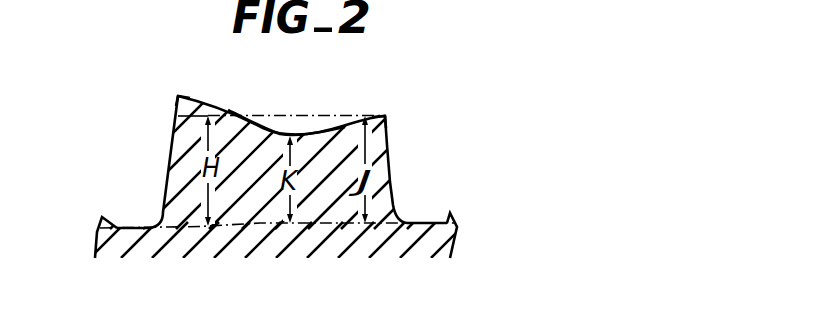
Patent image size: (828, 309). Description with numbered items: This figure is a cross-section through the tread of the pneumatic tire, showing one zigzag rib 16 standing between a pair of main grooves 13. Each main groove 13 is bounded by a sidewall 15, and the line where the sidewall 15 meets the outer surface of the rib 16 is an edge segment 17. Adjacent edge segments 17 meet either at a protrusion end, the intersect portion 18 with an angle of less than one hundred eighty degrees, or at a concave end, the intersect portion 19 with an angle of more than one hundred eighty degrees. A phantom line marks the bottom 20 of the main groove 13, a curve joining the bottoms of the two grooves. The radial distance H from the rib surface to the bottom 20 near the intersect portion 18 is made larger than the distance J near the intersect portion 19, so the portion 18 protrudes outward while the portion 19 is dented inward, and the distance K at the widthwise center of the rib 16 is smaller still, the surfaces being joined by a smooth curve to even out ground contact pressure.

The main groove 13 is at (105, 217).
The sidewall of the main groove 15 is at (170, 145).
The rib 16 is at (322, 136).
The edge segment 17 is at (225, 99).
The intersect portion (protrusion end) 18 is at (178, 96).
The intersect portion (concave end) 19 is at (386, 116).
The bottom of the main groove 20 is at (132, 228).